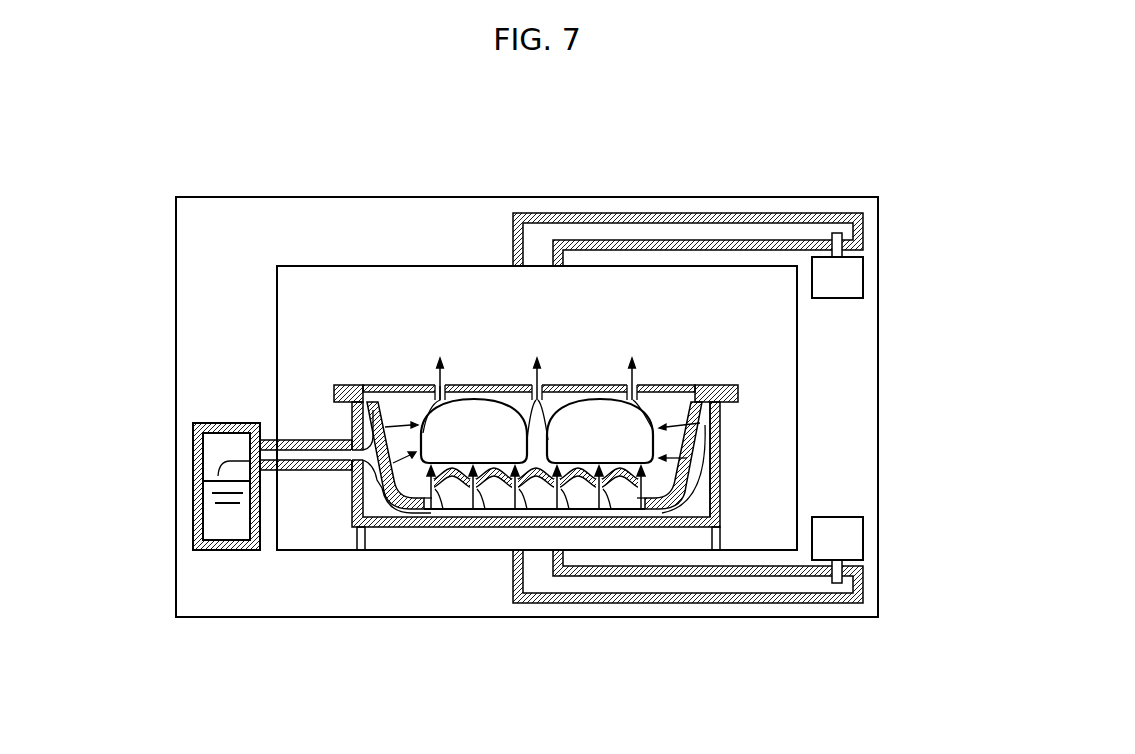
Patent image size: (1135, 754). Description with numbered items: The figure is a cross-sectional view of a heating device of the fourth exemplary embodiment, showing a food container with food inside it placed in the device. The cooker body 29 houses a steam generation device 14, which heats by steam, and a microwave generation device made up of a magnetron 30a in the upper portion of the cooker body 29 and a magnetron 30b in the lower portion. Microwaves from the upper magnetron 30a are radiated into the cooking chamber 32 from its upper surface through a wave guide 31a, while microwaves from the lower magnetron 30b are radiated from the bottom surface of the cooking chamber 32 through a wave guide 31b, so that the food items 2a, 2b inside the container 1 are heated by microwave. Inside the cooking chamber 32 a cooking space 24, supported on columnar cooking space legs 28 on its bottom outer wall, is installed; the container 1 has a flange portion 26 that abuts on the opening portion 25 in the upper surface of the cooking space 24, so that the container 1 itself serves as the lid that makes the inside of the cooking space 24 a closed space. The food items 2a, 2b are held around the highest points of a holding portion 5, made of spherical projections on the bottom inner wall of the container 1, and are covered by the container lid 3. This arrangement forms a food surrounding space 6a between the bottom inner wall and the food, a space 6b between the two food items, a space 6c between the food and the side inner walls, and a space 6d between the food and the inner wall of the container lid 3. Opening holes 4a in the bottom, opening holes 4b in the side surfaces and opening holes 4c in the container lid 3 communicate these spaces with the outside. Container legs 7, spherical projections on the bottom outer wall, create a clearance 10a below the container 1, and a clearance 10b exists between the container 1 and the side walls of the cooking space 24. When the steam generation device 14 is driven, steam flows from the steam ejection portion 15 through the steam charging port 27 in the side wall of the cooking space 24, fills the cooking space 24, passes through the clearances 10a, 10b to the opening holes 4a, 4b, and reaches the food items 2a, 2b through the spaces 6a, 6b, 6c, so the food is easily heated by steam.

The container 1 is at (503, 420).
The food item 2a is at (472, 430).
The food item 2b is at (600, 420).
The container lid 3 is at (557, 418).
The opening holes 4a is at (476, 497).
The opening holes 4b is at (367, 475).
The opening holes 4c is at (633, 385).
The holding portion 5 is at (452, 486).
The food surrounding space 6a is at (617, 478).
The food surrounding space 6b is at (544, 415).
The food surrounding space 6c is at (403, 447).
The food surrounding space 6d is at (454, 386).
The container legs 7 is at (405, 493).
The clearance 10a is at (540, 492).
The clearance 10b is at (380, 468).
The steam generation device 14 is at (225, 550).
The steam ejection portion 15 is at (303, 440).
The cooking space 24 is at (522, 510).
The opening portion 25 is at (720, 440).
The flange portion 26 is at (712, 415).
The steam charging port 27 is at (348, 520).
The cooking space legs 28 is at (717, 548).
The cooker body 29 is at (243, 275).
The magnetron 30a is at (842, 285).
The magnetron 30b is at (842, 543).
The wave guide 31a is at (777, 213).
The wave guide 31b is at (826, 603).
The cooking chamber 32 is at (299, 550).